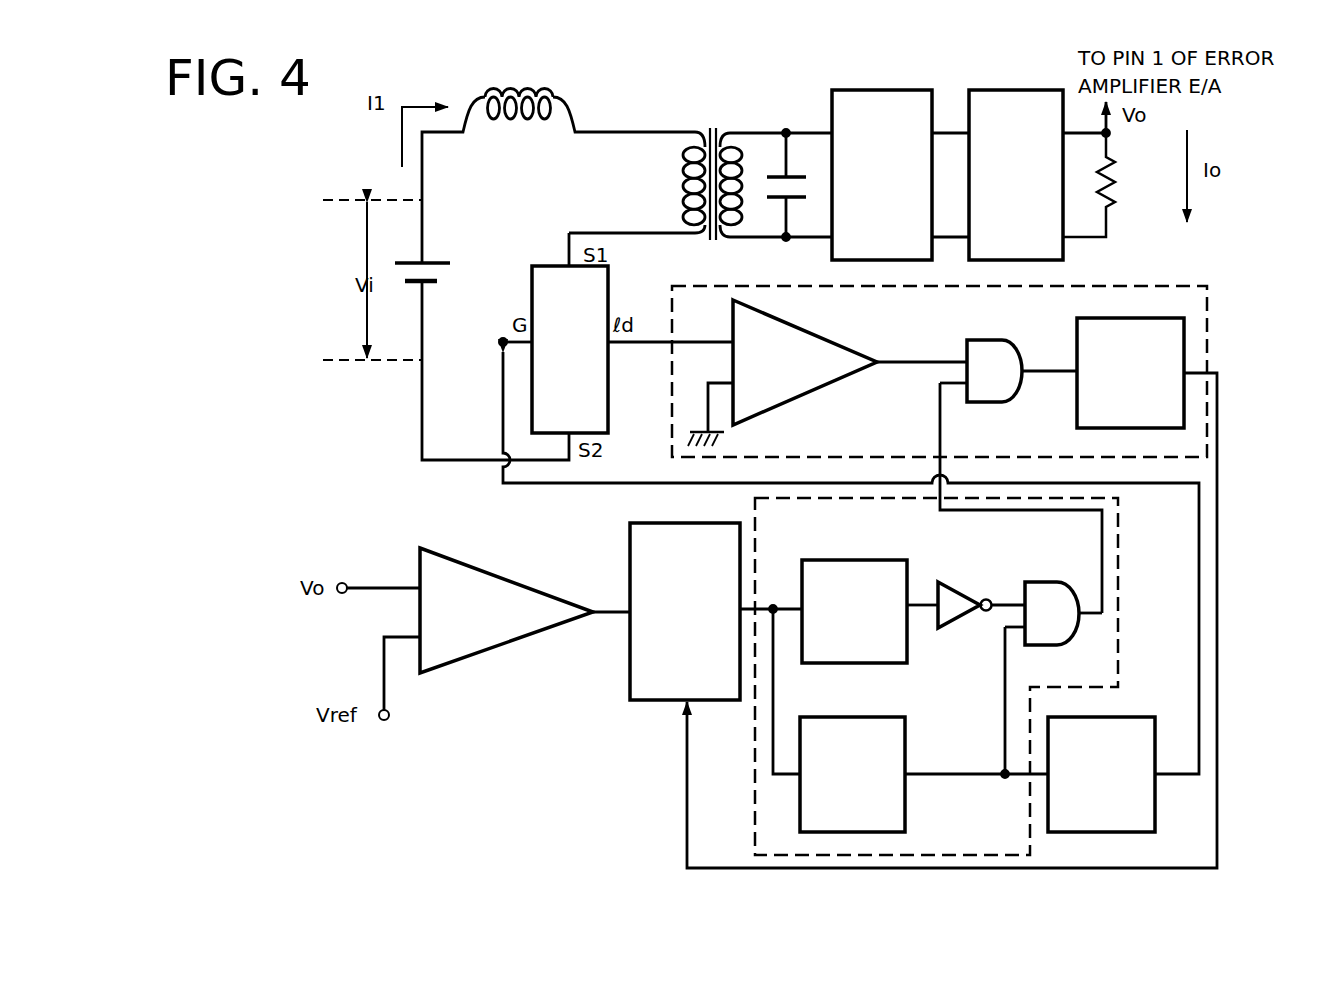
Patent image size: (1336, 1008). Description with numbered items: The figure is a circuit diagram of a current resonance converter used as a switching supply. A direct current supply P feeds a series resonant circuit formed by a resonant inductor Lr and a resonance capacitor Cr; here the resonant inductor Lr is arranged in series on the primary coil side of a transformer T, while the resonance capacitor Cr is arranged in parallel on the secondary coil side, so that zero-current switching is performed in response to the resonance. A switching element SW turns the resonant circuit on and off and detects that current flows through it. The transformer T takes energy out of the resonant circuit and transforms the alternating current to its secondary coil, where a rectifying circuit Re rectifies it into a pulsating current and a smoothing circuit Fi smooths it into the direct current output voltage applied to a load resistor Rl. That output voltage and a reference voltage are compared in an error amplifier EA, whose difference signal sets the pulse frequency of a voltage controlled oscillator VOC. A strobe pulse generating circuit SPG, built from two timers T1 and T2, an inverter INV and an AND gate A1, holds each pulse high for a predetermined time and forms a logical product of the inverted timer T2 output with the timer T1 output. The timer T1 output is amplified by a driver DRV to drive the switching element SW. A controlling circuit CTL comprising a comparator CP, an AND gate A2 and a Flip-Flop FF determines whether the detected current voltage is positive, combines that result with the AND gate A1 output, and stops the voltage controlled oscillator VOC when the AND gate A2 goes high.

The resonant inductor Lr is at (565, 85).
The direct current supply P is at (422, 256).
The switching element SW is at (532, 264).
The transformer T is at (713, 126).
The resonance capacitor Cr is at (773, 173).
The rectifying circuit Re is at (867, 90).
The smoothing circuit Fi is at (1002, 90).
The load resistor Rl is at (1104, 185).
The controlling circuit CTL is at (1210, 330).
The comparator CP is at (798, 395).
The AND gate A2 is at (987, 340).
The Flip-Flop FF is at (1100, 318).
The error amplifier EA is at (490, 570).
The voltage controlled oscillator VOC is at (653, 523).
The strobe pulse generating circuit SPG is at (813, 857).
The timer T2 is at (845, 560).
The inverter INV is at (958, 585).
The AND gate A1 is at (1043, 582).
The timer T1 is at (837, 717).
The driver DRV is at (1103, 717).